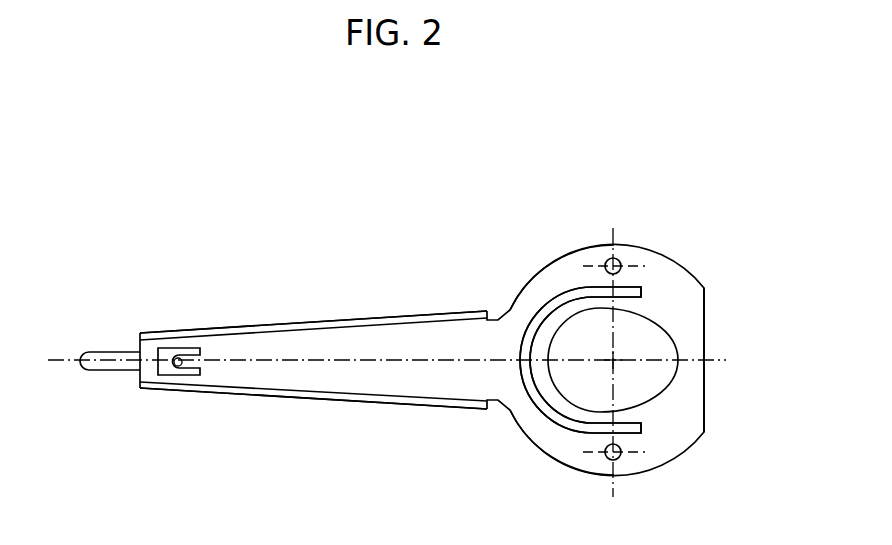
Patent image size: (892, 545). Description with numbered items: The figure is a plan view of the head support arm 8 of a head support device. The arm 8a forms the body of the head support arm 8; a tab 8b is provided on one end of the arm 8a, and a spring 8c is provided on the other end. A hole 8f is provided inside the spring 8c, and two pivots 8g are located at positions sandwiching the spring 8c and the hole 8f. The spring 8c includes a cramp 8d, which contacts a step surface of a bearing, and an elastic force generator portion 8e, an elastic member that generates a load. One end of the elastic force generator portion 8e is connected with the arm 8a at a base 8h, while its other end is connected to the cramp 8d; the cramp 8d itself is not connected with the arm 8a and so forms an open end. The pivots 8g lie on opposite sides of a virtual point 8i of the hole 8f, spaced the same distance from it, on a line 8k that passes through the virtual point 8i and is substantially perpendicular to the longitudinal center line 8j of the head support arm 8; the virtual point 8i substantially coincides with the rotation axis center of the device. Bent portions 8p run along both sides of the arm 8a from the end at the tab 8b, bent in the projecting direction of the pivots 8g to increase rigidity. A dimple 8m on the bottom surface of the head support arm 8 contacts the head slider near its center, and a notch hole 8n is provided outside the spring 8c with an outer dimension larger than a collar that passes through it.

The head support arm 8 is at (767, 156).
The arm 8a is at (396, 340).
The tab 8b is at (104, 352).
The spring 8c is at (602, 200).
The cramp 8d is at (547, 337).
The elastic force generator portion 8e is at (614, 297).
The hole 8f is at (703, 283).
The pivots 8g is at (616, 446).
The base 8h is at (660, 345).
The virtual point 8i is at (613, 360).
The longitudinal center line 8j is at (443, 360).
The line 8k is at (613, 483).
The dimple 8m is at (180, 357).
The notch hole 8n is at (526, 330).
The bent portions 8p is at (307, 397).